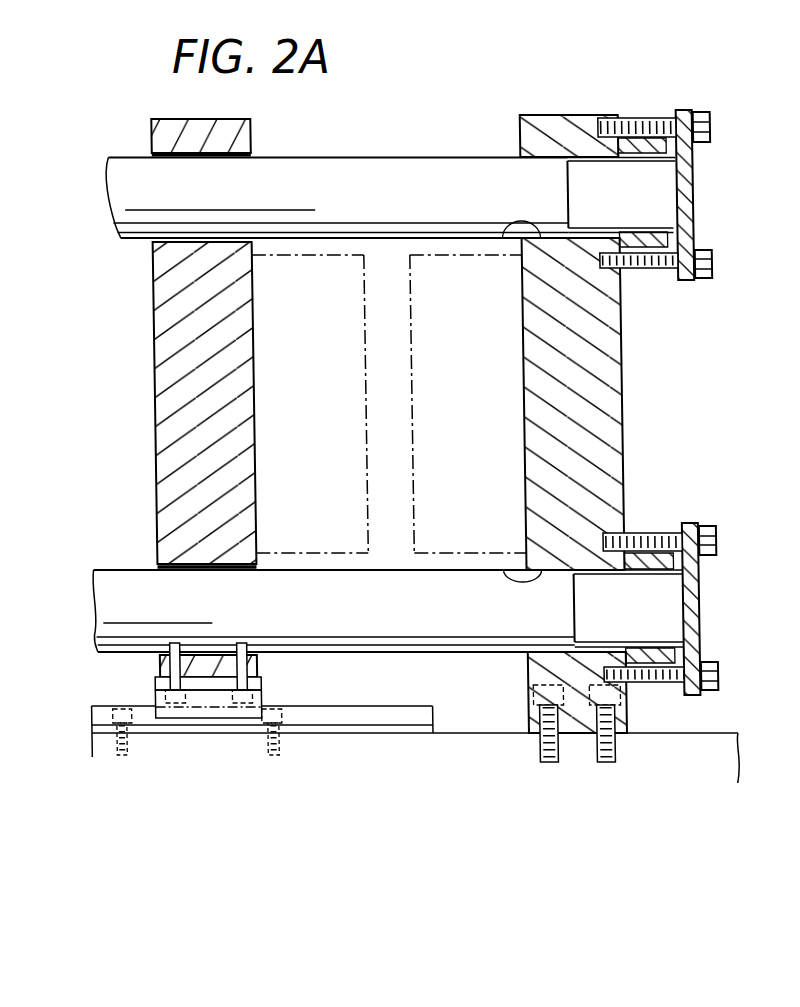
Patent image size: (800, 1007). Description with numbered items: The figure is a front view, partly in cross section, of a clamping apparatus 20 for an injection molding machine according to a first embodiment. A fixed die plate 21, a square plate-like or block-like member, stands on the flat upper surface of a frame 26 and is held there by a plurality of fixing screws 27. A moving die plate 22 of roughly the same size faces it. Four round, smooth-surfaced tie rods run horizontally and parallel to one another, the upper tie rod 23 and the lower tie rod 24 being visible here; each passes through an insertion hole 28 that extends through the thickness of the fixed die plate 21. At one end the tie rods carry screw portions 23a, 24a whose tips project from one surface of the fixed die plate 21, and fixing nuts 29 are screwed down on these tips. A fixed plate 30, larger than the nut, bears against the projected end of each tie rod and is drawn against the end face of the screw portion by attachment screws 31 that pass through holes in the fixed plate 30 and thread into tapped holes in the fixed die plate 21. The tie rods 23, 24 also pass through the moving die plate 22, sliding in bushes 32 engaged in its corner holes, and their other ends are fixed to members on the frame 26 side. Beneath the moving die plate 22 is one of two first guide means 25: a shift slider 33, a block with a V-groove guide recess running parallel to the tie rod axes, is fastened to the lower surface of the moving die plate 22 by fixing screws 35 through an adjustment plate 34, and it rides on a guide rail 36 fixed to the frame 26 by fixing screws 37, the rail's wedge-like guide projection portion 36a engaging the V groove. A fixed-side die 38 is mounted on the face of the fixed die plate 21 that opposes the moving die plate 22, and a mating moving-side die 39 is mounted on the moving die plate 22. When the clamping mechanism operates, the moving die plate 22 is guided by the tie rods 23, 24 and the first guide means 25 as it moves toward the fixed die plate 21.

The clamping apparatus 20 is at (423, 132).
The fixed die plate 21 is at (604, 400).
The moving die plate 22 is at (231, 395).
The tie rod 23 is at (312, 170).
The screw portion 23a is at (579, 180).
The tie rod 24 is at (312, 588).
The screw portion 24a is at (651, 612).
The first guide means 25 is at (181, 750).
The frame 26 is at (706, 727).
The fixing screw 27 is at (543, 763).
The insertion hole 28 is at (507, 242).
The fixing nut 29 is at (638, 122).
The fixed plate 30 is at (682, 165).
The attachment screw 31 is at (698, 122).
The bush 32 is at (166, 143).
The shift slider 33 is at (209, 713).
The adjustment plate 34 is at (147, 681).
The fixing screw 35 is at (243, 695).
The guide rail 36 is at (379, 735).
The guide projection portion 36a is at (388, 712).
The fixing screw 37 is at (104, 752).
The fixed-side die 38 is at (403, 317).
The moving-side die 39 is at (360, 512).